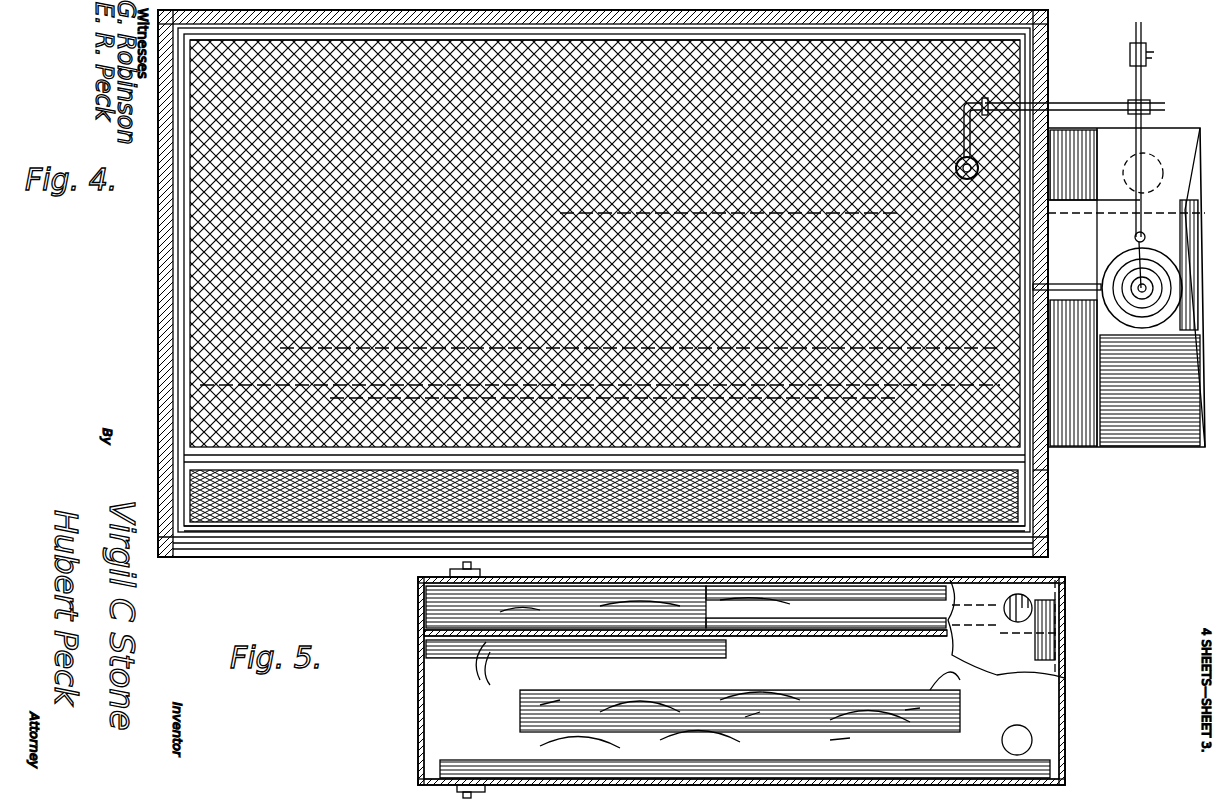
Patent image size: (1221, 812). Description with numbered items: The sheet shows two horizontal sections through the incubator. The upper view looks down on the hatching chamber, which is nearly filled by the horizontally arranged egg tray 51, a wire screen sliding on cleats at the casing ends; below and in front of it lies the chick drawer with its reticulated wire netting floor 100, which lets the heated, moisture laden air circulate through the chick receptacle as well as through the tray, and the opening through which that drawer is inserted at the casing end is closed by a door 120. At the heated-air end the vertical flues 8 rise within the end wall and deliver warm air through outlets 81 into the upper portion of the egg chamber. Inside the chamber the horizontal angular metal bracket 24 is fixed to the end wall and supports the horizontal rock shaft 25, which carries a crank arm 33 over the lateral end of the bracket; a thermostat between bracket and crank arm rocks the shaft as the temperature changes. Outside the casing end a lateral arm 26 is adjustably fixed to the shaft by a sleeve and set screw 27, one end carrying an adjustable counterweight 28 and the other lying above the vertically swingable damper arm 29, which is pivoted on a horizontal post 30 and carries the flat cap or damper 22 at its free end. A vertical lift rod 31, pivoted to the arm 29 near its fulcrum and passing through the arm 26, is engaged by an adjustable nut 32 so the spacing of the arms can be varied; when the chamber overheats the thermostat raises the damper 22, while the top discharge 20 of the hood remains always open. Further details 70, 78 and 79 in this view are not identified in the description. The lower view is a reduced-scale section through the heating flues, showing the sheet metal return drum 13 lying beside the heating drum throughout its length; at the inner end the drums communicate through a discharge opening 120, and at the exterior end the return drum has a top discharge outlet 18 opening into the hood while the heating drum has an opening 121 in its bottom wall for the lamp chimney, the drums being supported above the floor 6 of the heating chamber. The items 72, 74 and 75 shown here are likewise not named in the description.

In FIG. 4, the floor 6 is at (605, 67).
In FIG. 4, the vertical flues 8 is at (168, 512).
In FIG. 5, the return drum 13 is at (741, 681).
In FIG. 5, the top discharge opening 18 is at (1030, 600).
In FIG. 4, the top discharge 20 is at (1157, 322).
In FIG. 4, the damper 22 is at (1140, 310).
In FIG. 4, the angular metal bracket 24 is at (960, 112).
In FIG. 4, the rock shaft 25 is at (1062, 108).
In FIG. 4, the lateral arm 26 is at (1146, 130).
In FIG. 4, the sleeve and set screw 27 is at (1150, 102).
In FIG. 4, the adjustable counterweight 28 is at (1147, 55).
In FIG. 4, the damper carrying arm 29 is at (1145, 228).
In FIG. 4, the horizontal post 30 is at (1080, 200).
In FIG. 4, the vertical lift rod 31 is at (605, 243).
In FIG. 4, the adjustable nut 32 is at (1100, 256).
In FIG. 4, the crank arm 33 is at (955, 166).
In FIG. 4, the egg tray 51 is at (655, 345).
In FIG. 4, the cross bar 70 is at (545, 482).
In FIG. 5, the lower chamber 72 is at (738, 688).
In FIG. 5, the bracket 74 is at (482, 574).
In FIG. 5, the stud 75 is at (462, 565).
In FIG. 4, the opening 78 is at (1160, 168).
In FIG. 4, the side wall 79 is at (1162, 430).
In FIG. 4, the outlets 81 is at (604, 500).
In FIG. 4, the wire netting floor 100 is at (372, 508).
In FIG. 4, the discharge opening 120 is at (1048, 494).
In FIG. 5, the discharge opening 120 is at (418, 652).
In FIG. 5, the opening 121 is at (1017, 740).